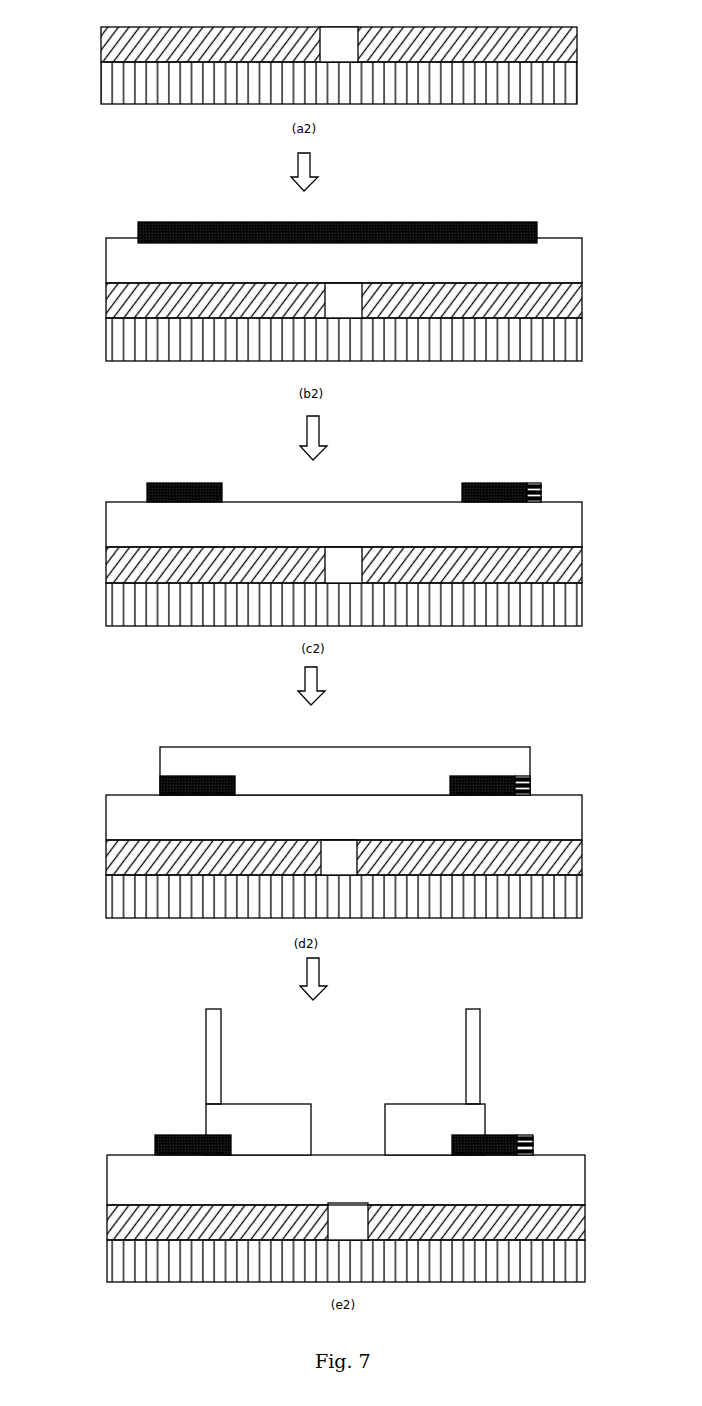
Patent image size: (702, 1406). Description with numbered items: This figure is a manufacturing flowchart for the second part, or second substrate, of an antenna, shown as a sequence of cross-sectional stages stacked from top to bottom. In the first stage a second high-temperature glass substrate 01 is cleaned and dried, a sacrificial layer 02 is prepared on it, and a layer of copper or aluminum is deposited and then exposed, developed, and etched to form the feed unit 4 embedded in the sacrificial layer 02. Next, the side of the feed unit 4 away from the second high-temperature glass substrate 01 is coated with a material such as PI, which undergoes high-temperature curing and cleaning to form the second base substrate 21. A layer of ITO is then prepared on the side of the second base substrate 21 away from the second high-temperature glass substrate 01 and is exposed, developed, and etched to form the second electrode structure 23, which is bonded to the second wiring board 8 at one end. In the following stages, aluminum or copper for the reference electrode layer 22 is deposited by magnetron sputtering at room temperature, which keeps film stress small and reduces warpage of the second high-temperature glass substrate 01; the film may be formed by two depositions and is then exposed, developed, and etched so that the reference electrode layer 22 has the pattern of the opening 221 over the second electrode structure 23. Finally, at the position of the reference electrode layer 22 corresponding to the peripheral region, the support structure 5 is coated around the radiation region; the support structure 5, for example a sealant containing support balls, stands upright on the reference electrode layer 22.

The second high-temperature glass substrate 01 is at (145, 82).
The sacrificial layer 02 is at (140, 42).
The feed unit 4 is at (362, 38).
The second base substrate 21 is at (150, 265).
The reference electrode layer 22 is at (178, 756).
The opening 221 is at (362, 1123).
The second electrode structure 23 is at (138, 231).
The second wiring board 8 is at (538, 483).
The support structure 5 is at (213, 1062).